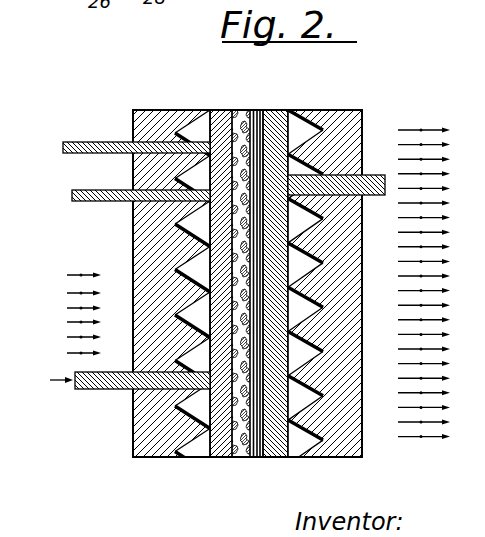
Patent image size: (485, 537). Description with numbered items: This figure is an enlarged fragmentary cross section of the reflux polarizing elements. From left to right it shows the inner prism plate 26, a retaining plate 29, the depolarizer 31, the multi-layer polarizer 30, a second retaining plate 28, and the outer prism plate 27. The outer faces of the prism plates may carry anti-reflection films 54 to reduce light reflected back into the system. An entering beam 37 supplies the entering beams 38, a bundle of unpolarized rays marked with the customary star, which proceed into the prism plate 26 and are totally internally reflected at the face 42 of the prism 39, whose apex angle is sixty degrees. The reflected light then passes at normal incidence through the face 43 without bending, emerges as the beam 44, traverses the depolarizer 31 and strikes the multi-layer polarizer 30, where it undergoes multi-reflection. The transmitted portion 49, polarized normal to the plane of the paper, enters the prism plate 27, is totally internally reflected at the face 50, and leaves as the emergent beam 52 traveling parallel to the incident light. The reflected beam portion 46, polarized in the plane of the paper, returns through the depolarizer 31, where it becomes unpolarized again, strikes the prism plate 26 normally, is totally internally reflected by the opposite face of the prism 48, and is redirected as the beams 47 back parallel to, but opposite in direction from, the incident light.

The inner prism plate 26 is at (157, 307).
The outer prism plate 27 is at (325, 307).
The retaining plate 28 is at (284, 458).
The retaining plate 29 is at (222, 458).
The multi-layer polarizer 30 is at (258, 460).
The depolarizer 31 is at (248, 458).
The entering beam 37 is at (70, 322).
The entering beams 38 is at (90, 390).
The prism 39 is at (210, 375).
The prism face 42 is at (205, 385).
The prism face 43 is at (235, 355).
The emerging beam 44 is at (235, 355).
The reflected beam portion 46 is at (225, 240).
The redirected beams 47 is at (88, 188).
The prism 48 is at (250, 258).
The transmitted beam portion 49 is at (284, 243).
The prism face 50 is at (284, 243).
The emergent beam 52 is at (400, 176).
The anti-reflection film 54 is at (133, 428).